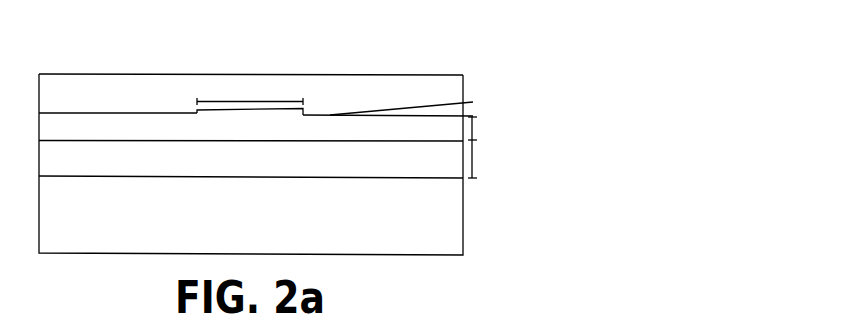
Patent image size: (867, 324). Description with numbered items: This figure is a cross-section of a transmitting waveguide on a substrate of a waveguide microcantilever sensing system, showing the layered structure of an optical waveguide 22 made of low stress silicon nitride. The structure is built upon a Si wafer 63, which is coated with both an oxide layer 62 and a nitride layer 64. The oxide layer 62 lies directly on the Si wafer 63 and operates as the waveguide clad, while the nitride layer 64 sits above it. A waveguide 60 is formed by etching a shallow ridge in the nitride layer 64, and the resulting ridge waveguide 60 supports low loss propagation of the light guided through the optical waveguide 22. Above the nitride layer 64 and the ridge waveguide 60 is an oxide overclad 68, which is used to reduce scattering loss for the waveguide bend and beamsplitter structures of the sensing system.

The oxide overclad 68 is at (113, 92).
The ridge waveguide 60 is at (277, 118).
The nitride layer 64 is at (437, 132).
The oxide layer 62 is at (412, 160).
The Si wafer 63 is at (427, 230).
The optical waveguide 22 is at (652, 160).